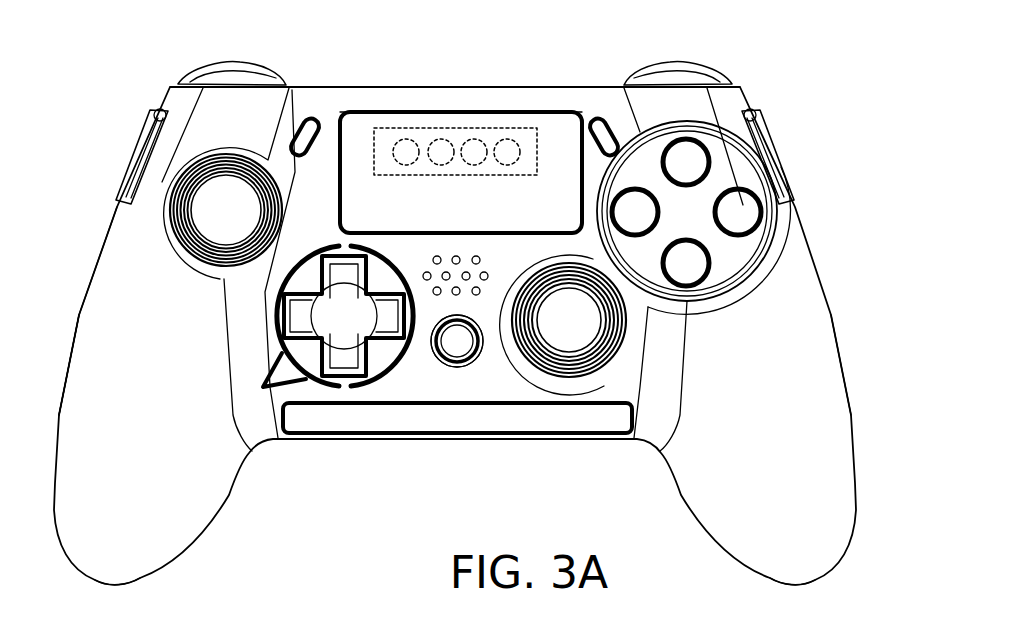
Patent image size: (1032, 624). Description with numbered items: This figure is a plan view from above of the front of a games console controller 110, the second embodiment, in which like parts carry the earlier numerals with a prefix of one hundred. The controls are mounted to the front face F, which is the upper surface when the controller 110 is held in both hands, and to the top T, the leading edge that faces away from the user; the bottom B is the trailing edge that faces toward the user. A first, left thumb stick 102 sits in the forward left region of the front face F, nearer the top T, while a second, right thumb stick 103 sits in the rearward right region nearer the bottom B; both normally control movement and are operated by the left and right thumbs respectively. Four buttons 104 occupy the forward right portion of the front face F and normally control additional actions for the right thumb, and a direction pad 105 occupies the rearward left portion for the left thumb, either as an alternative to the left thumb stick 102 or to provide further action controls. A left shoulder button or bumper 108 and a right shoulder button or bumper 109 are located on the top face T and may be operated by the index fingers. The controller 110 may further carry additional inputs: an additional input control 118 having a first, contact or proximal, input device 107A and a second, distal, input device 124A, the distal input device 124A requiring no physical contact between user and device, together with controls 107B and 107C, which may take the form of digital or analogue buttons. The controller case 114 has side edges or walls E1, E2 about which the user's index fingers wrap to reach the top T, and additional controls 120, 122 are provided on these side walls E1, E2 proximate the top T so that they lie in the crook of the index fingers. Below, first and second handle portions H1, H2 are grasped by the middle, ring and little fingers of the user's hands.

The controller 110 is at (527, 55).
The left thumb stick 102 is at (201, 224).
The right thumb stick 103 is at (546, 332).
The four buttons 104 is at (745, 222).
The direction pad 105 is at (367, 330).
The proximal input device 107A is at (363, 216).
The additional input control 107B is at (457, 348).
The additional input control 107C is at (308, 127).
The left shoulder button 108 is at (212, 70).
The right shoulder button 109 is at (702, 70).
The controller case 114 is at (121, 394).
The additional input control 118 is at (441, 116).
The additional control 120 is at (141, 131).
The additional control 122 is at (777, 130).
The distal input device 124A is at (464, 175).
The top T is at (413, 87).
The bottom B is at (351, 440).
The front F is at (426, 398).
The side wall E1 is at (834, 316).
The side wall E2 is at (79, 323).
The first handle portion H1 is at (759, 486).
The second handle portion H2 is at (117, 486).